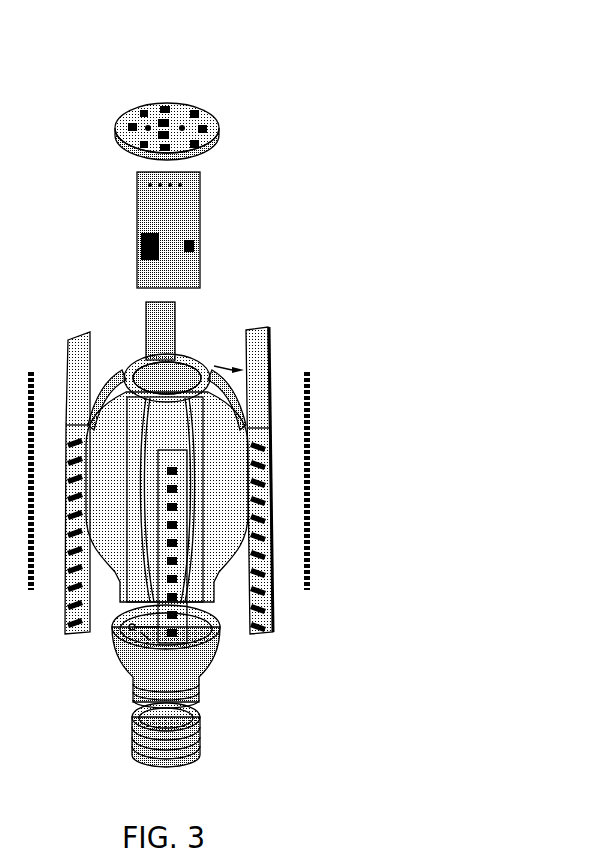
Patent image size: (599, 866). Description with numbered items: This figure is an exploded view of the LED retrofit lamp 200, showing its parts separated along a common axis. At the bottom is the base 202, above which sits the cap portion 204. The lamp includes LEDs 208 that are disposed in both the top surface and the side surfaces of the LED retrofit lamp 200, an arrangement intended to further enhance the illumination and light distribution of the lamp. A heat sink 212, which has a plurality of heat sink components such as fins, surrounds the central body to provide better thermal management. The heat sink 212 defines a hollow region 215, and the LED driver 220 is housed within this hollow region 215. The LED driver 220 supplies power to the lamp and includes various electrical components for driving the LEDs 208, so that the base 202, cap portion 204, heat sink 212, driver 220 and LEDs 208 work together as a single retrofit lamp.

The LED retrofit lamp 200 is at (130, 78).
The base 202 is at (200, 735).
The cap portion 204 is at (218, 645).
The LEDs 208 is at (194, 112).
The heat sink 212 is at (266, 341).
The hollow region 215 is at (180, 350).
The LED driver 220 is at (200, 226).